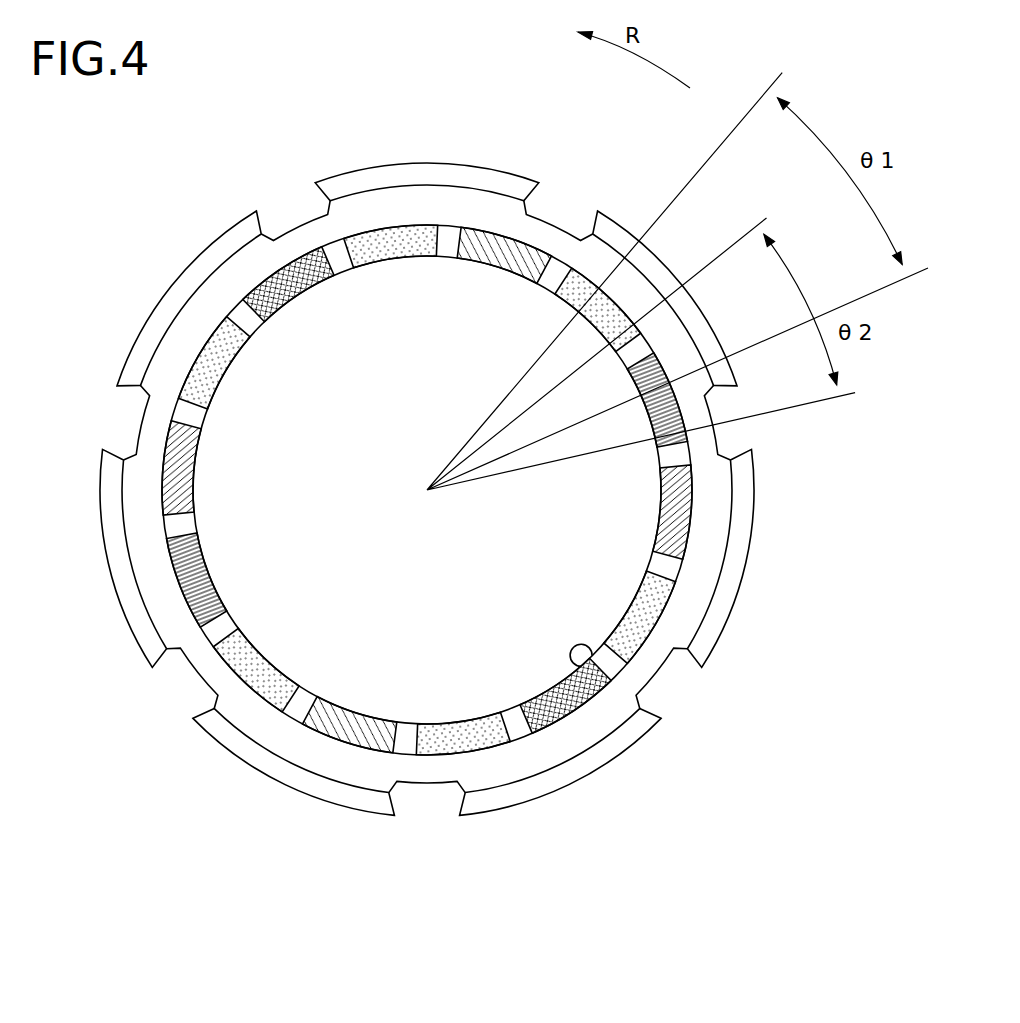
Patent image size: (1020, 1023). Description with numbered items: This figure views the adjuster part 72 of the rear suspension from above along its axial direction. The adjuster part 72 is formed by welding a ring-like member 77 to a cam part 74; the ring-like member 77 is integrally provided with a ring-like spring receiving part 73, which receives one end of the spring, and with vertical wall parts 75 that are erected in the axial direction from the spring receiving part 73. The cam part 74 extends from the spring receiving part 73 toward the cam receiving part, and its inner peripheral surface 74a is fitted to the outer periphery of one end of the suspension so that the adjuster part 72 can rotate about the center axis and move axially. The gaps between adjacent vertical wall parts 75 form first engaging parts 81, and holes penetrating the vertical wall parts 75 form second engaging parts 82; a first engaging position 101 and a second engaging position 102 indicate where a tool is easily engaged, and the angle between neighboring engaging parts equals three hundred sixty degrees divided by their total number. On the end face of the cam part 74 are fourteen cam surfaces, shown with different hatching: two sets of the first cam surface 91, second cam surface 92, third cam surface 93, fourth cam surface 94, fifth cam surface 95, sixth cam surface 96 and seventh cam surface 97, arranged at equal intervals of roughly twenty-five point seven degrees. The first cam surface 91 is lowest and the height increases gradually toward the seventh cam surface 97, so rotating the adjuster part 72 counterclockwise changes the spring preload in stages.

The adjuster part 72 is at (198, 247).
The spring receiving part 73 is at (505, 772).
The cam part 74 is at (550, 745).
The inner peripheral surface 74a is at (589, 664).
The vertical wall part 75 is at (215, 230).
The ring-like member 77 is at (124, 362).
The first engaging part 81 is at (312, 212).
The second engaging part 82 is at (460, 186).
The first cam surface 91 is at (240, 685).
The second cam surface 92 is at (178, 592).
The third cam surface 93 is at (163, 437).
The fourth cam surface 94 is at (195, 357).
The fifth cam surface 95 is at (290, 268).
The sixth cam surface 96 is at (390, 228).
The seventh cam surface 97 is at (350, 742).
The first engaging position 101 is at (283, 790).
The second engaging position 102 is at (432, 820).